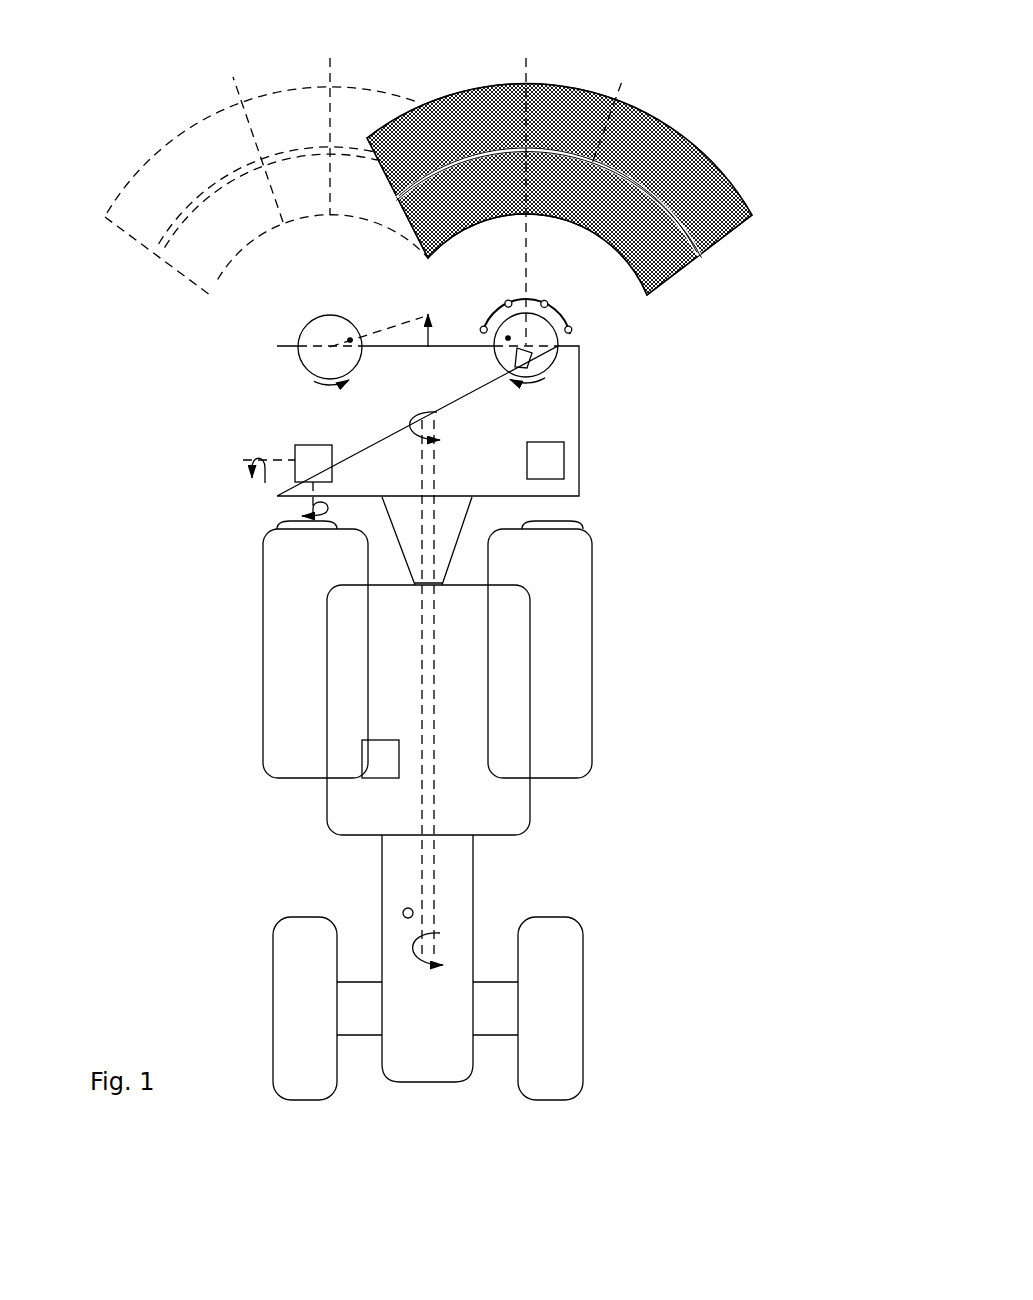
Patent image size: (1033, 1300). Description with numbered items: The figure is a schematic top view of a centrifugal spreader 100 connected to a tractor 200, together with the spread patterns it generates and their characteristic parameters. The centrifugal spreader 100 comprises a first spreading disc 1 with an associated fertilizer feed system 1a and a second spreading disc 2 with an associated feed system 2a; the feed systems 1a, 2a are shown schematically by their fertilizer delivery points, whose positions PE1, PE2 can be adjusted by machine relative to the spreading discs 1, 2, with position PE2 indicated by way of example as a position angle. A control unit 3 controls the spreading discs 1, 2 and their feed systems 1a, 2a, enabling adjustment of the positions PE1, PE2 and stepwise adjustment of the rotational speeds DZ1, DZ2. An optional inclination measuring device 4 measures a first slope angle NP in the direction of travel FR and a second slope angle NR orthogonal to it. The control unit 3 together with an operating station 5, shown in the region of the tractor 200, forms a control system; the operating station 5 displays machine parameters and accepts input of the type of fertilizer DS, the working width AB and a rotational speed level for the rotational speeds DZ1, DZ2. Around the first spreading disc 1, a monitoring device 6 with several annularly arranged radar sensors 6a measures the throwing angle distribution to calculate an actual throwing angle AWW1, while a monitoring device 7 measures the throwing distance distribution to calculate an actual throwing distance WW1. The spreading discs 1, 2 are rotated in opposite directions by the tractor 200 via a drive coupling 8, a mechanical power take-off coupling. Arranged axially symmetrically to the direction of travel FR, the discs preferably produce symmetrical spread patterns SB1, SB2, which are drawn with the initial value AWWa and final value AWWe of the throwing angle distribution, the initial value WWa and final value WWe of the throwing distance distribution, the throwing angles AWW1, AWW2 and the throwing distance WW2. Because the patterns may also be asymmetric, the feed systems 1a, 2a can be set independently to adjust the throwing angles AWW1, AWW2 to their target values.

The first spreading disc 1 is at (545, 342).
The fertilizer feed system 1a is at (508, 338).
The second spreading disc 2 is at (312, 338).
The feed system 2a is at (350, 340).
The control unit 3 is at (545, 460).
The inclination measuring device 4 is at (287, 479).
The operating station 5 is at (380, 759).
The monitoring device 6 is at (574, 324).
The radar sensors 6a is at (571, 332).
The monitoring device 7 is at (520, 358).
The drive coupling 8 is at (431, 667).
The centrifugal spreader 100 is at (608, 495).
The tractor 200 is at (572, 813).
The working width AB is at (740, 32).
The throwing angle AWW1 is at (620, 87).
The throwing angle AWW2 is at (330, 70).
The initial value of throwing angle distribution AWWa is at (366, 136).
The final value of throwing angle distribution AWWe is at (830, 215).
The spread pattern SB1 is at (690, 118).
The spread pattern SB2 is at (150, 140).
The type of fertilizer DS is at (712, 186).
The throwing distance WW1 is at (593, 162).
The throwing distance WW2 is at (150, 247).
The initial value of throwing distance distribution WWa is at (651, 310).
The final value of throwing distance distribution WWe is at (748, 246).
The position of delivery point PE1 is at (506, 334).
The position of delivery point PE2 is at (392, 323).
The rotational speed DZ1 is at (538, 385).
The rotational speed DZ2 is at (314, 386).
The first slope angle NP is at (252, 452).
The second slope angle NR is at (305, 505).
The direction of travel FR is at (428, 1192).